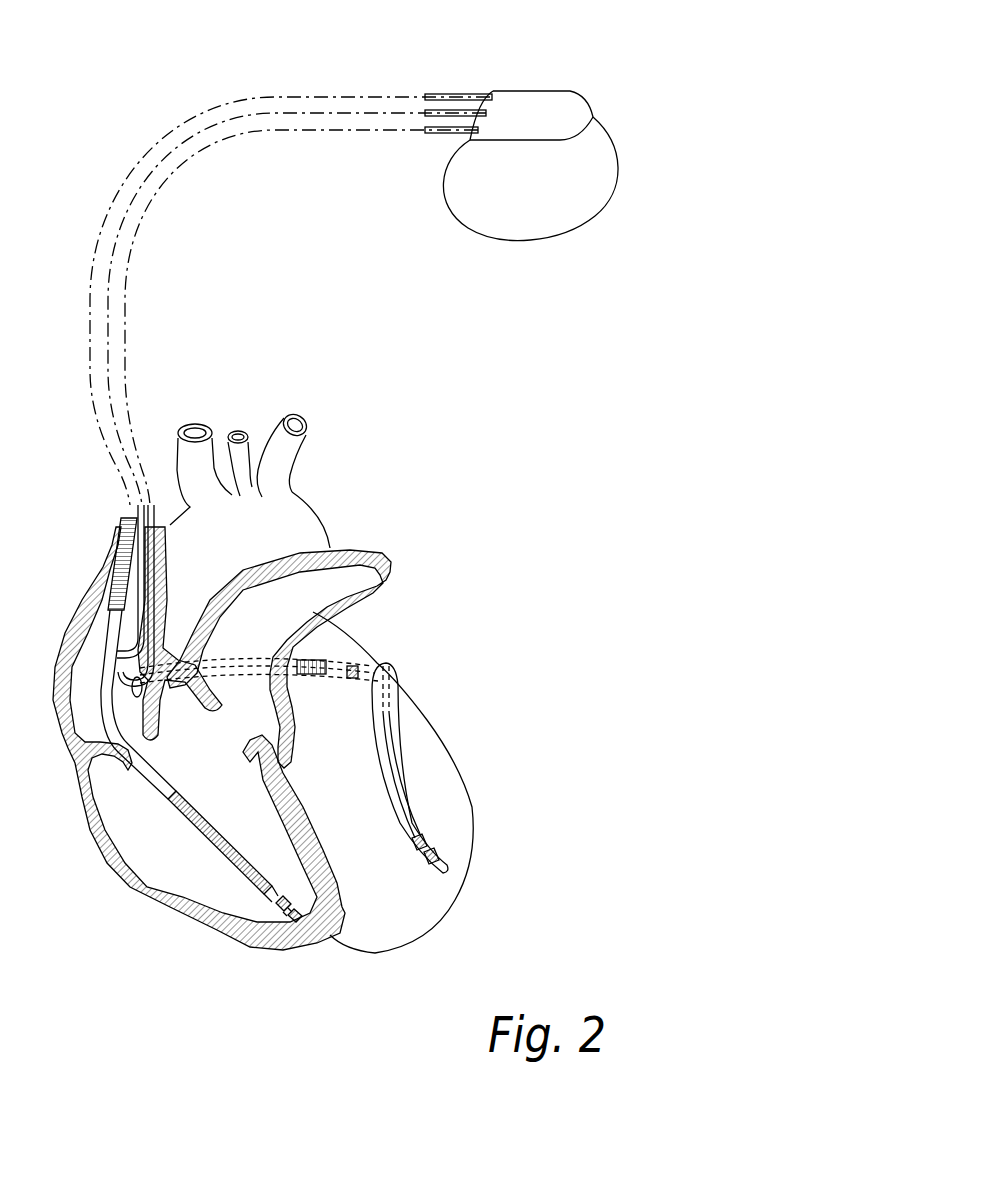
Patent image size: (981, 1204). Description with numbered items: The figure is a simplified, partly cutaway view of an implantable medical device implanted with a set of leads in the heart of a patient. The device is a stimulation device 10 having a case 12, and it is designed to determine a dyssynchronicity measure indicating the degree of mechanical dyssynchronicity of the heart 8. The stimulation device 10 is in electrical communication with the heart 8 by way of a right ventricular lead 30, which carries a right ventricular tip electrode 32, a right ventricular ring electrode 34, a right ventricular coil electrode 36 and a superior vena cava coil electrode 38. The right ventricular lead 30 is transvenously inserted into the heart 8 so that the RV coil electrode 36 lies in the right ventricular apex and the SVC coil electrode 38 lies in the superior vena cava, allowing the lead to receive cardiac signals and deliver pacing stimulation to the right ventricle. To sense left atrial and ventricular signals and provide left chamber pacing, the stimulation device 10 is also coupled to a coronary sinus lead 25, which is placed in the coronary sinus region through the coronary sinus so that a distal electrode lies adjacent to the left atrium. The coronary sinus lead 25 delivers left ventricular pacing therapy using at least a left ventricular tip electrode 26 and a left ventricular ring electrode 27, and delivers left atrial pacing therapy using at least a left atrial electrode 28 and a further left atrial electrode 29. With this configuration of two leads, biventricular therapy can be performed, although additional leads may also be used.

The heart 8 is at (465, 712).
The stimulation device 10 is at (563, 141).
The case 12 is at (600, 175).
The coronary sinus lead 25 is at (222, 137).
The left ventricular tip electrode 26 is at (437, 858).
The left ventricular ring electrode 27 is at (420, 842).
The left atrial electrode 28 is at (337, 722).
The left atrial electrode 29 is at (318, 660).
The right ventricular lead 30 is at (345, 97).
The right ventricular tip electrode 32 is at (293, 920).
The right ventricular ring electrode 34 is at (280, 905).
The right ventricular coil electrode 36 is at (235, 870).
The superior vena cava coil electrode 38 is at (118, 510).